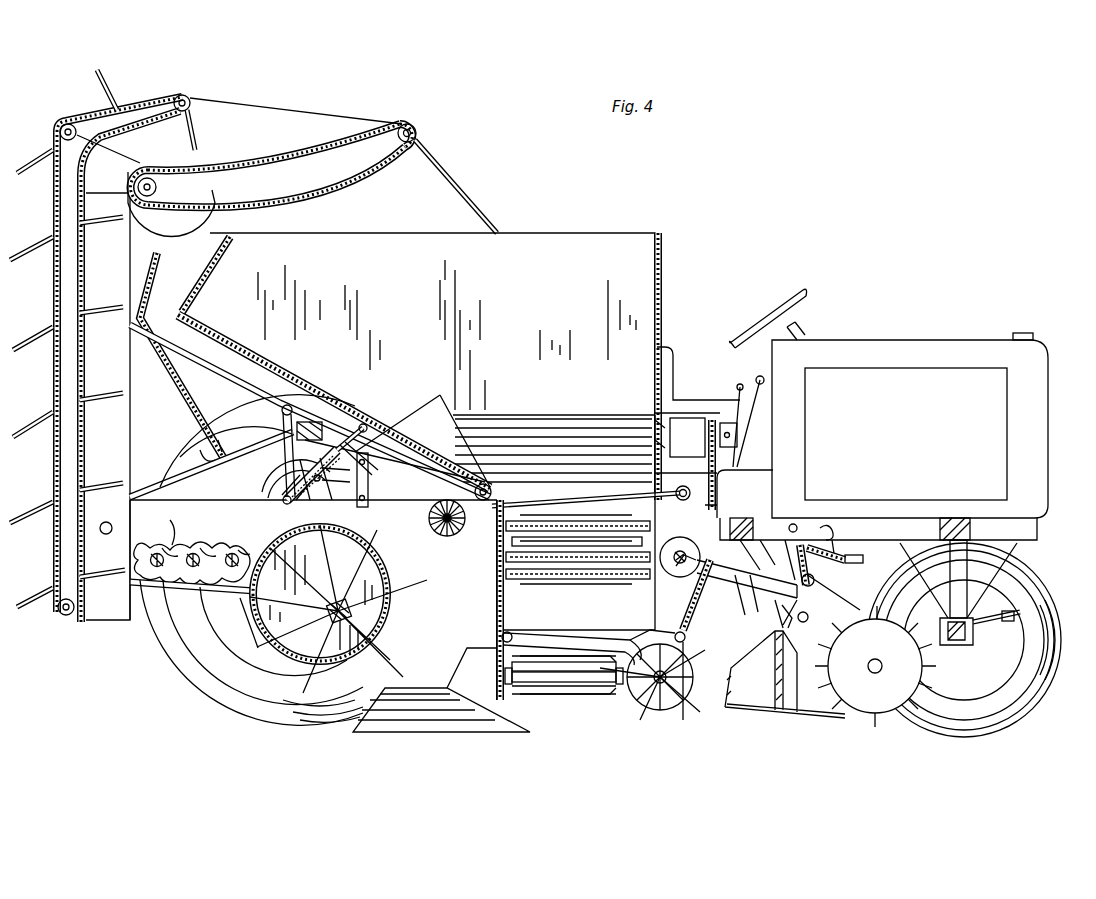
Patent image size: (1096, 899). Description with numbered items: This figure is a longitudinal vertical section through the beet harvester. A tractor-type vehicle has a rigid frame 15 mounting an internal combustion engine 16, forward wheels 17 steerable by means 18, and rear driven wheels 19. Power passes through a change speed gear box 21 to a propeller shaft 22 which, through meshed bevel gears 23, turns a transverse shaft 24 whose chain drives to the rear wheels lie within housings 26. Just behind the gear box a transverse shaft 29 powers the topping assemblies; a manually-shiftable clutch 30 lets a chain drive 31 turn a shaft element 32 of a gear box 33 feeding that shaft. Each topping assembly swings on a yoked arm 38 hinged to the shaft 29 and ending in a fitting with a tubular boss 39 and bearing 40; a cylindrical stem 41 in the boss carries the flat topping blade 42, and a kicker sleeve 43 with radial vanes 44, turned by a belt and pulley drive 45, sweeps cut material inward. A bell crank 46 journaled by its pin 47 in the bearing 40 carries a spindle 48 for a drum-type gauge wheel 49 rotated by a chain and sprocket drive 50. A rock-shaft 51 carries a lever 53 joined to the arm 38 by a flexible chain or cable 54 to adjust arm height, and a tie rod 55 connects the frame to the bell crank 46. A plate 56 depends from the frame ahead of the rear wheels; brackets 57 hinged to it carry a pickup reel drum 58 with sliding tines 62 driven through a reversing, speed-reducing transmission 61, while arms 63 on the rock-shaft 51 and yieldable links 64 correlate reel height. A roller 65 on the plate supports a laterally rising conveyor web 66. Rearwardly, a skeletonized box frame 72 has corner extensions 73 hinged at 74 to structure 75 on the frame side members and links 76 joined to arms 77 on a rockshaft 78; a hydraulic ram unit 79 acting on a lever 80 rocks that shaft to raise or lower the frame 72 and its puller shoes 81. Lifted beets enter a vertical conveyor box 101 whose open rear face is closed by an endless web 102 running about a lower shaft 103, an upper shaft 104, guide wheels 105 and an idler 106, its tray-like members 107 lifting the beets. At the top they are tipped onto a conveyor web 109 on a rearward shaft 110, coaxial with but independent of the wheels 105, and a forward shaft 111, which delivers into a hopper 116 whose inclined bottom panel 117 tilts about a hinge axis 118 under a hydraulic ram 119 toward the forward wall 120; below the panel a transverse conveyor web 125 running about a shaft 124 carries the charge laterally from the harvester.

The frame 15 is at (1040, 556).
The internal combustion engine 16 is at (910, 425).
The wheels 17 is at (964, 638).
The steering means 18 is at (788, 330).
The wheels 19 is at (251, 652).
The change speed gear box 21 is at (745, 494).
The propeller shaft 22 is at (538, 506).
The meshed bevel gears 23 is at (458, 530).
The shaft 24 is at (432, 519).
The housings 26 is at (278, 506).
The shaft 29 is at (680, 580).
The manually-shiftable clutch 30 is at (742, 440).
The chain drive 31 is at (706, 465).
The shaft element 32 is at (706, 438).
The gear box 33 is at (680, 436).
The yoked arm 38 is at (694, 596).
The tubular boss 39 is at (747, 600).
The bearing 40 is at (814, 615).
The cylindrical stem 41 is at (784, 509).
The topping blade 42 is at (798, 716).
The tubular sleeve 43 is at (774, 626).
The vanes 44 is at (800, 680).
The belt and pulley drive 45 is at (732, 598).
The bell crank 46 is at (832, 590).
The pin 47 is at (808, 590).
The spindle 48 is at (882, 668).
The gauge wheel 49 is at (852, 728).
The chain and sprocket drive 50 is at (798, 630).
The rock-shaft 51 is at (726, 560).
The lever 53 is at (768, 549).
The flexible link 54 is at (820, 539).
The tie rod 55 is at (846, 552).
The plate 56 is at (504, 606).
The brackets 57 is at (538, 642).
The drum 58 is at (672, 700).
The reversing and speed-reducing transmission 61 is at (688, 642).
The tines 62 is at (696, 670).
The arms 63 is at (708, 540).
The links 64 is at (698, 616).
The roller 65 is at (512, 668).
The conveyor web 66 is at (548, 700).
The frame 72 is at (285, 538).
The side wall upper corner extensions 73 is at (196, 590).
The hinged connection 74 is at (116, 508).
The rigidly-associated structure 75 is at (200, 456).
The links 76 is at (358, 506).
The arms 77 is at (336, 478).
The rockshaft 78 is at (278, 485).
The hydraulic ram unit 79 is at (338, 426).
The lever 80 is at (282, 425).
The puller shoes 81 is at (484, 732).
The conveyor box 101 is at (130, 366).
The conveyor web 102 is at (60, 472).
The shaft 103 is at (58, 616).
The shaft 104 is at (188, 97).
The guide wheels 105 is at (171, 204).
The direction-changing idler 106 is at (62, 124).
The tray-like members 107 is at (104, 76).
The conveyor web 109 is at (310, 156).
The rearward shaft 110 is at (158, 187).
The forward shaft 111 is at (418, 128).
The hopper 116 is at (434, 366).
The bottom panel 117 is at (300, 372).
The hinge axis 118 is at (440, 430).
The hydraulic ram 119 is at (320, 505).
The hopper forward wall 120 is at (673, 372).
The shaft 124 is at (640, 586).
The conveyor web 125 is at (496, 576).